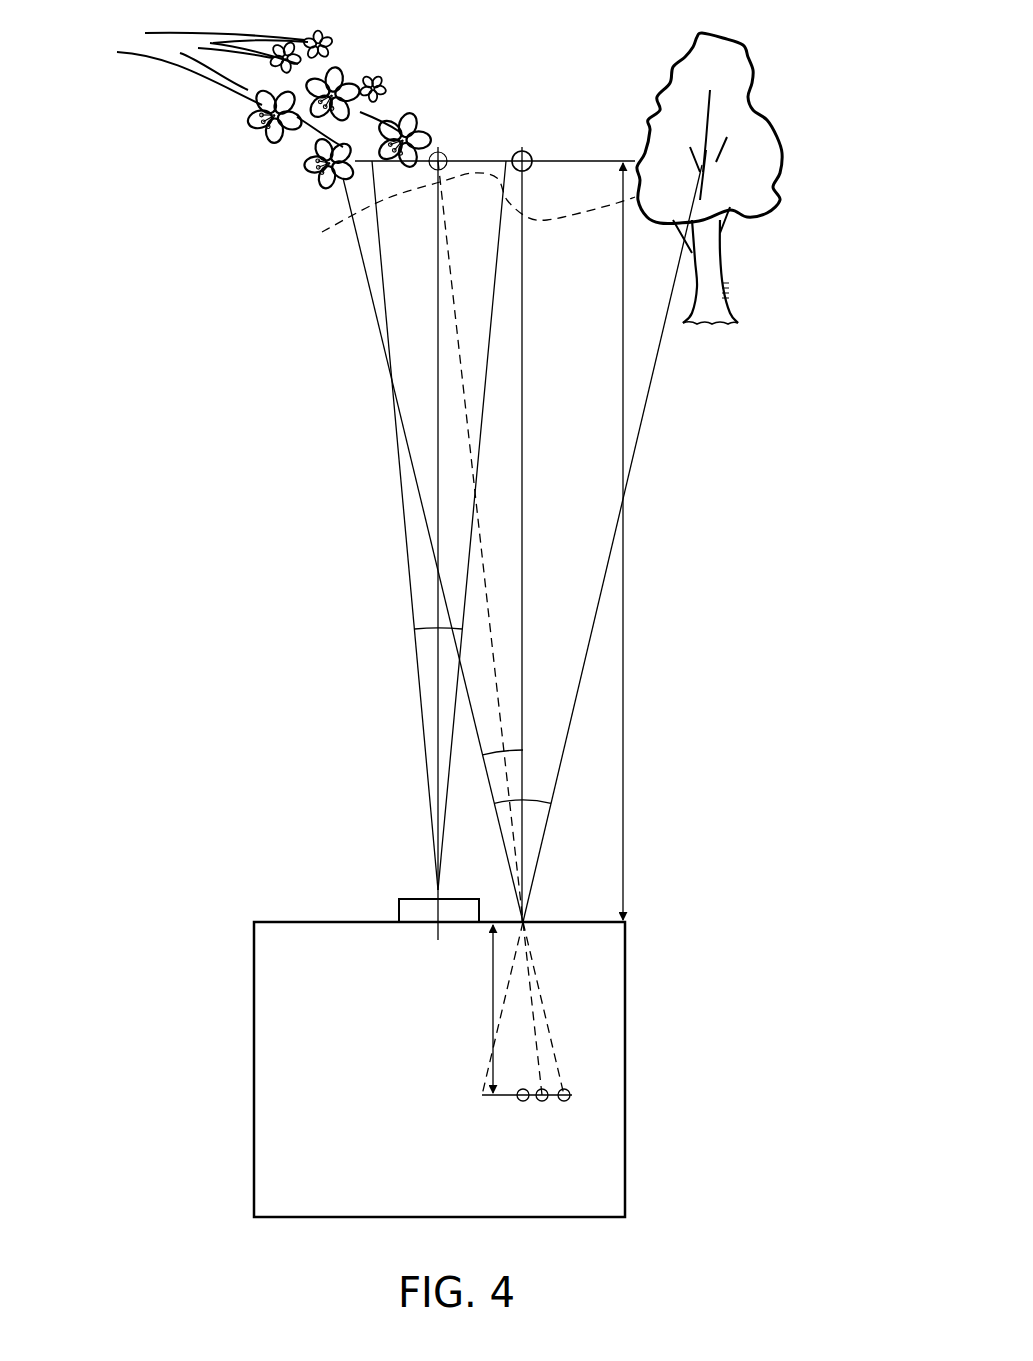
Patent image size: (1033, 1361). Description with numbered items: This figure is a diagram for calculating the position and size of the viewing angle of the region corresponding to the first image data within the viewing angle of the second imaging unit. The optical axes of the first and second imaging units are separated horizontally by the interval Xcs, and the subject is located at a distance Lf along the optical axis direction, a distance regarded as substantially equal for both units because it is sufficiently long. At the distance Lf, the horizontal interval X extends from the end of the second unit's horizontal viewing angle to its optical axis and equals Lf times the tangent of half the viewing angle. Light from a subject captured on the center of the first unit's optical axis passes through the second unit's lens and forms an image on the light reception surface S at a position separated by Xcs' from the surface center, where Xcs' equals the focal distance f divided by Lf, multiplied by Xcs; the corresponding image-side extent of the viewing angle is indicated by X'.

The horizontal interval X is at (318, 110).
The optical axis interval Xcs is at (480, 523).
The subject distance Lf is at (610, 541).
The focal distance f is at (484, 1009).
The light reception surface S is at (500, 1098).
The image position offset Xcs' is at (538, 1122).
The image of the horizontal interval X' is at (543, 1143).